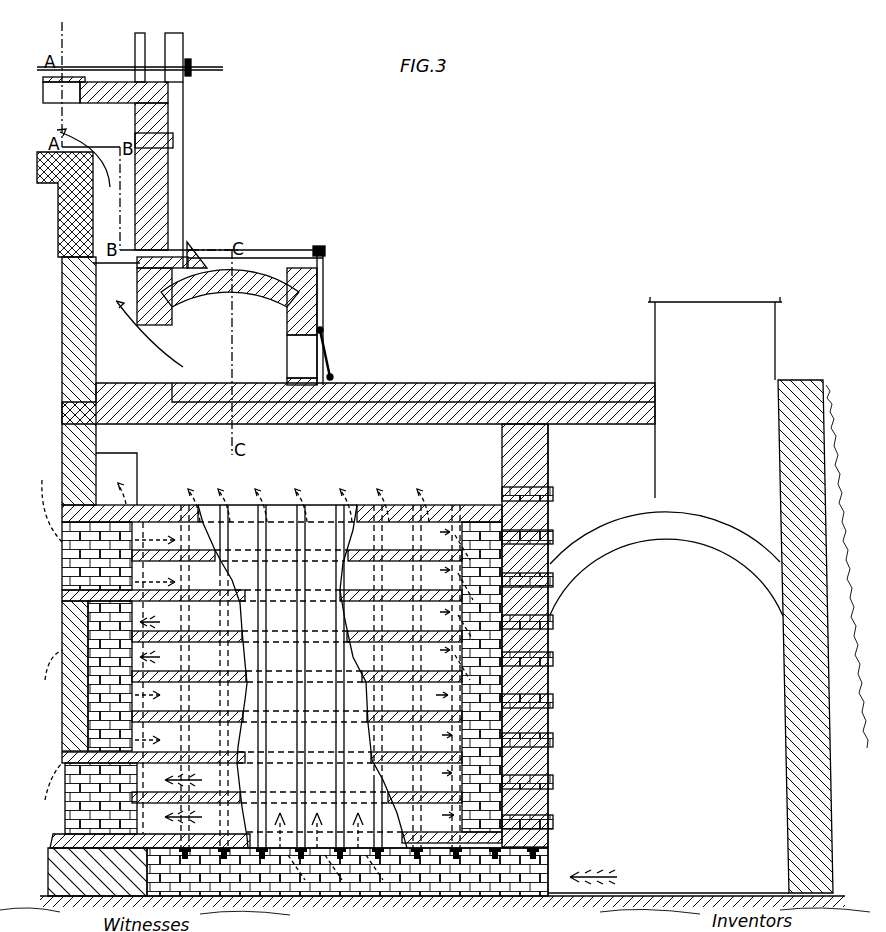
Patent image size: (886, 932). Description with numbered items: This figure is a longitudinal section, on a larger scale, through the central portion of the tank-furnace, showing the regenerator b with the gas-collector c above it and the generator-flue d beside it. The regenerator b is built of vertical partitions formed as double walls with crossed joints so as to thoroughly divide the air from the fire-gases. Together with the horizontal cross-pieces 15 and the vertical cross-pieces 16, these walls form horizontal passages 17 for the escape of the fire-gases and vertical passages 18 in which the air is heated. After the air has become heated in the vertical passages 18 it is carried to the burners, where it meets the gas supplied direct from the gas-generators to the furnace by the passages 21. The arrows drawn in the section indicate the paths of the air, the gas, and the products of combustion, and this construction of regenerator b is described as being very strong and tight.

The horizontal cross-pieces 15 is at (177, 674).
The vertical cross-pieces 16 is at (312, 660).
The horizontal passages 17 is at (222, 610).
The vertical passages 18 is at (301, 781).
The passages 21 is at (75, 195).
The regenerator b is at (302, 676).
The gas-collector c is at (358, 381).
The generator-flue d is at (708, 595).